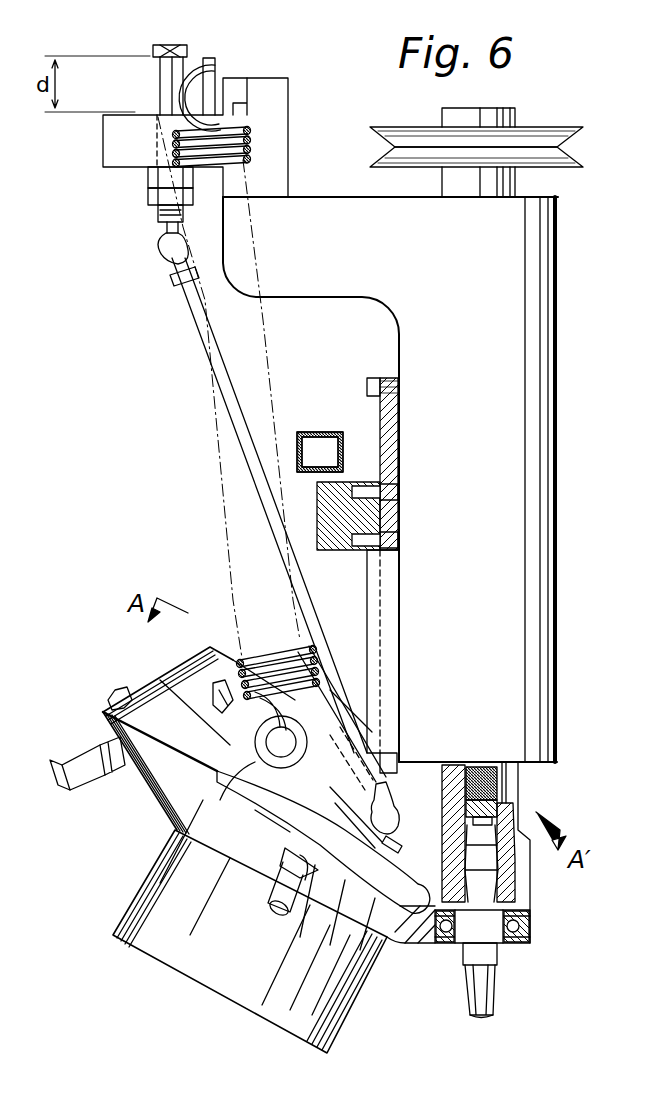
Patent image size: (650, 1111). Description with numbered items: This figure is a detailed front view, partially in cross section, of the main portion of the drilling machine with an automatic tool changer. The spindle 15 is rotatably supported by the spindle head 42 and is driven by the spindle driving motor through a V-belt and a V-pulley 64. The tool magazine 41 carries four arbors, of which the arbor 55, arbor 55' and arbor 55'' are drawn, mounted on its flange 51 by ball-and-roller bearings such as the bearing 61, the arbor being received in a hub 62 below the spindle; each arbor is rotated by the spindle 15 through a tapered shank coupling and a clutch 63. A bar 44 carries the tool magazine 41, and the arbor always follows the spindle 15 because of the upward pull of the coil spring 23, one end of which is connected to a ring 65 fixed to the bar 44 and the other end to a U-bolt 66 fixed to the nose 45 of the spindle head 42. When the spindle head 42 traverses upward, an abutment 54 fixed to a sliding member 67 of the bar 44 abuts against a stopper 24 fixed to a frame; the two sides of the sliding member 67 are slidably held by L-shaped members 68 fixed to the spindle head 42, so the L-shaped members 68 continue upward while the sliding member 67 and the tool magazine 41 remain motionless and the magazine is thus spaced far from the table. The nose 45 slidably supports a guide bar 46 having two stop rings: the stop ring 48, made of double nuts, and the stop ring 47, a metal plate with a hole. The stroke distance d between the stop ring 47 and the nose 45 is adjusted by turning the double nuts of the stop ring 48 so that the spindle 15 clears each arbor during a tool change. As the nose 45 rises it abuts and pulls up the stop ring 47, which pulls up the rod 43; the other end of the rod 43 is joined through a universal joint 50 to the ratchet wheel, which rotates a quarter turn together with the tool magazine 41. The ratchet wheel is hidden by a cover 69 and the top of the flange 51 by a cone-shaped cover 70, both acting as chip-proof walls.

The spindle 15 is at (510, 782).
The coil spring 23 is at (160, 128).
The stopper 24 is at (320, 432).
The tool magazine 41 is at (150, 900).
The spindle head 42 is at (538, 610).
The rod 43 is at (232, 418).
The bar 44 is at (352, 692).
The nose 45 is at (262, 125).
The guide bar 46 is at (183, 66).
The stop ring 47 is at (153, 51).
The stop ring 48 is at (148, 190).
The universal joint 50 is at (390, 820).
The flange 51 is at (415, 942).
The abutment 54 is at (320, 540).
The arbor 55 is at (502, 980).
The arbor 55' is at (277, 880).
The arbor 55'' is at (87, 750).
The ball-and-roller bearing 61 is at (530, 928).
The bearing hub 62 is at (500, 845).
The clutch 63 is at (500, 795).
The V-pulley 64 is at (535, 135).
The ring 65 is at (172, 800).
The U-bolt 66 is at (215, 70).
The sliding member 67 is at (392, 430).
The L-shaped member 68 is at (395, 752).
The cover 69 is at (396, 852).
The cone-shaped cover 70 is at (148, 690).